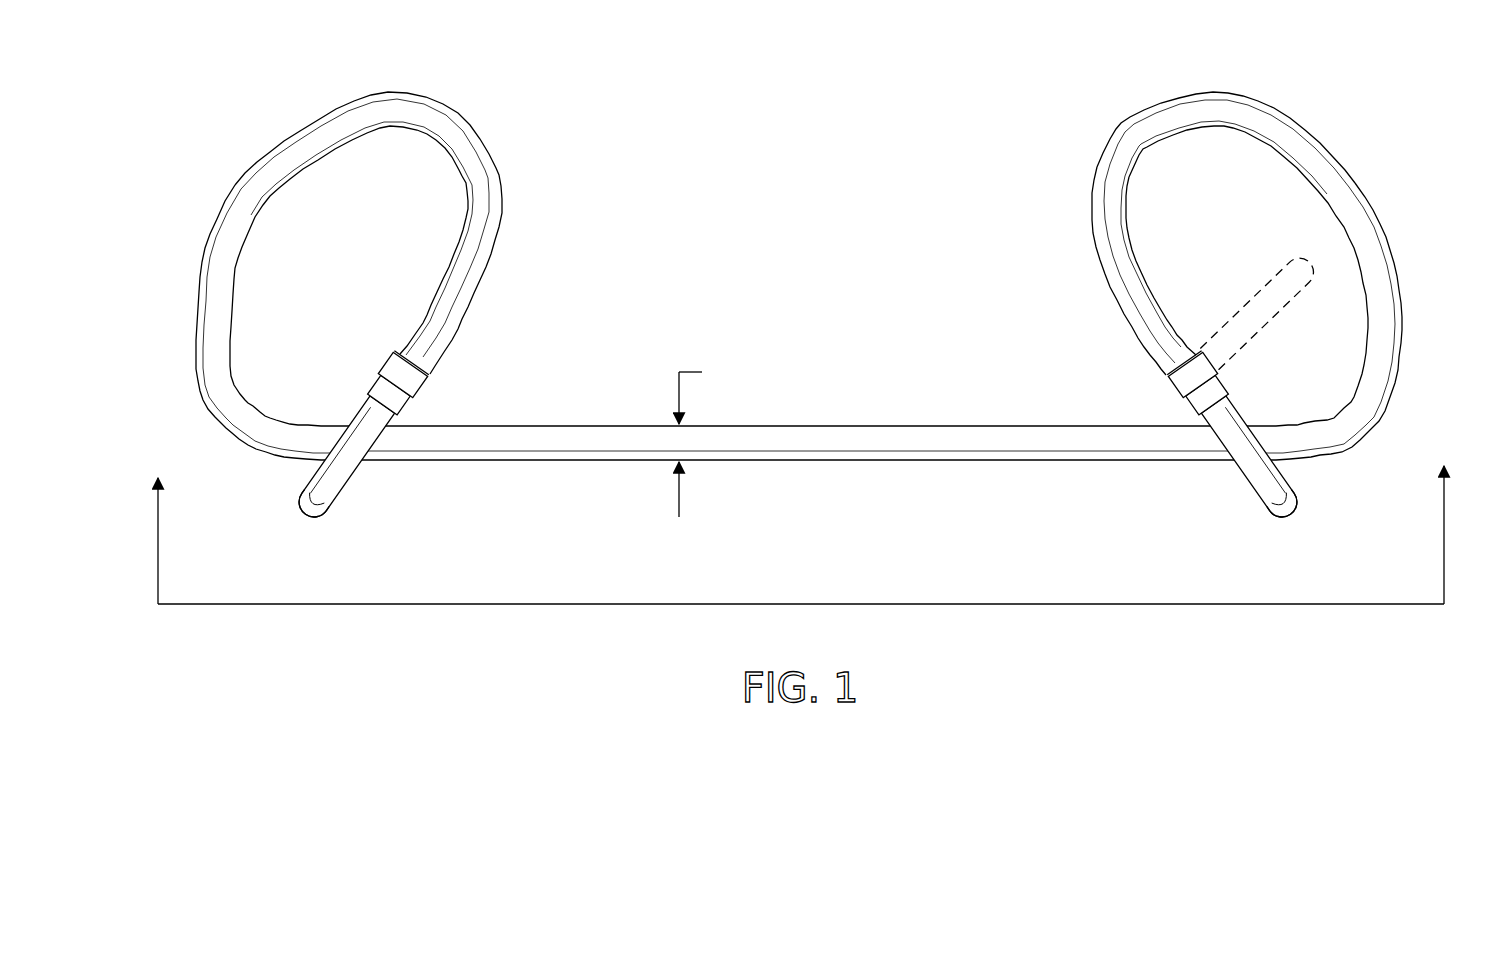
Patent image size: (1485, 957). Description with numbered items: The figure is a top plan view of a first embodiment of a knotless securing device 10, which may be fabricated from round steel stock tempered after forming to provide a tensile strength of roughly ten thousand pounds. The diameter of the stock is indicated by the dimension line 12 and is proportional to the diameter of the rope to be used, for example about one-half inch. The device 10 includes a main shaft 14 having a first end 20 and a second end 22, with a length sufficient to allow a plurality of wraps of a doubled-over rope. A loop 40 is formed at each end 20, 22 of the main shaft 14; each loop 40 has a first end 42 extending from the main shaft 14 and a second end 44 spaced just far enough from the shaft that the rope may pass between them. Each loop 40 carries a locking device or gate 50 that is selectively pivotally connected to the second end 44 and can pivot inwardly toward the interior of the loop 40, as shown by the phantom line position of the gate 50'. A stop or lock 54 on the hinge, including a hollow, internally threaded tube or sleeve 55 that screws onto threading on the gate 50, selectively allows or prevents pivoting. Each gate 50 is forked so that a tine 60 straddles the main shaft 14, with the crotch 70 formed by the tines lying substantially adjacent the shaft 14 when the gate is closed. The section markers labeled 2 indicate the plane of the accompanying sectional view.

The knotless securing device 10 is at (626, 487).
The dimension line 12 is at (710, 436).
The main shaft 14 is at (797, 463).
The first end 20 is at (1195, 435).
The second end 22 is at (432, 443).
The loop 40 is at (479, 127).
The first end 42 is at (282, 439).
The second end 44 is at (434, 340).
The locking device or gate 50 is at (840, 426).
The gate in phantom line position 50' is at (1251, 259).
The stop or lock 54 is at (444, 367).
The tube or sleeve 55 is at (391, 355).
The tine 60 is at (318, 506).
The crotch 70 is at (398, 415).
The section line 2- 2 is at (803, 564).